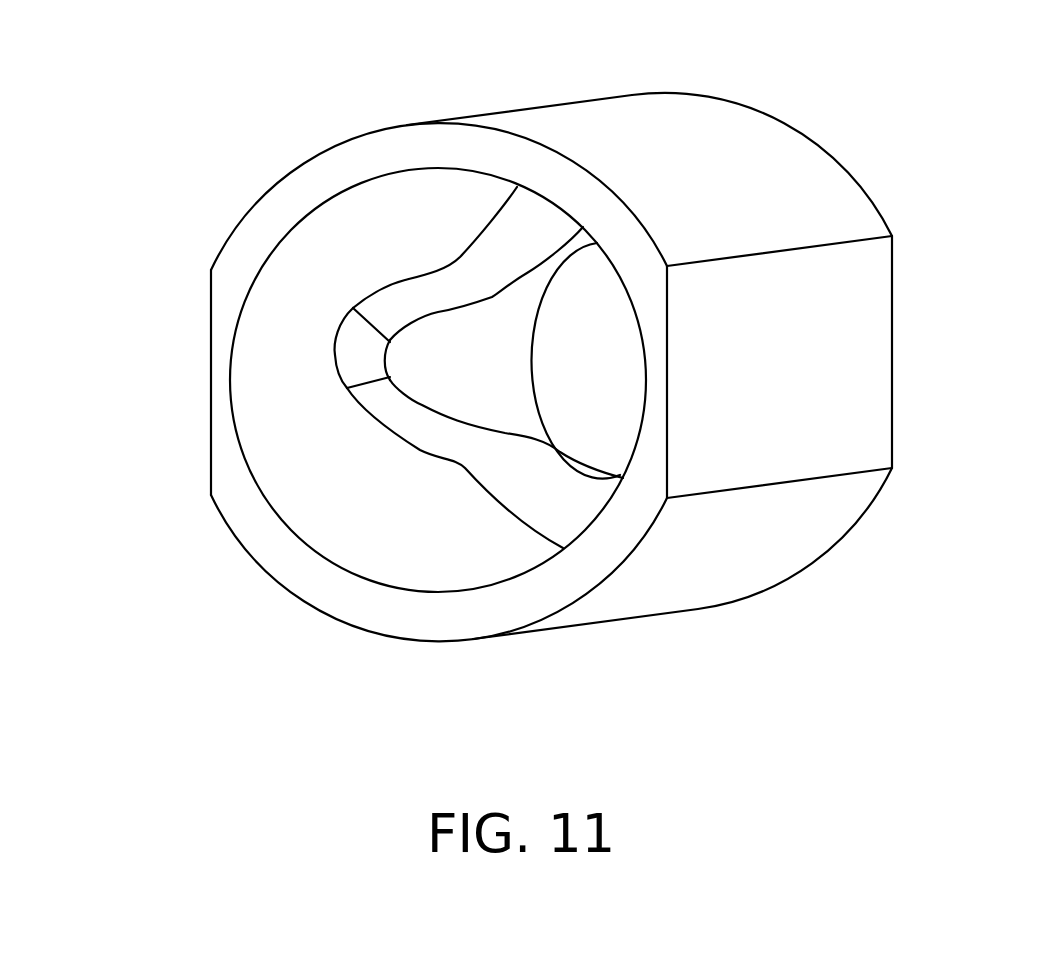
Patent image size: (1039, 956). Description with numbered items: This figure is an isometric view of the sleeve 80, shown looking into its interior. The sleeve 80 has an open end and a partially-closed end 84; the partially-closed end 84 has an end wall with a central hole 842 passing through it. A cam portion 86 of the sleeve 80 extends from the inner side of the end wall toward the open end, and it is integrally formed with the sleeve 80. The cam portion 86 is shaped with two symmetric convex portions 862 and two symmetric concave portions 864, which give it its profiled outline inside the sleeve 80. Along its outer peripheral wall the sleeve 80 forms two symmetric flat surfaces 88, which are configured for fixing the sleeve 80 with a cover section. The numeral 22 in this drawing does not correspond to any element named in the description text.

The sleeve 80 is at (513, 78).
The partially-closed end 84 is at (835, 160).
The flat surfaces 88 is at (835, 407).
The front annular face 22 is at (308, 568).
The cam portion 86 is at (428, 350).
The convex portions 862 is at (355, 338).
The concave portions 864 is at (548, 485).
The central hole 842 is at (597, 368).